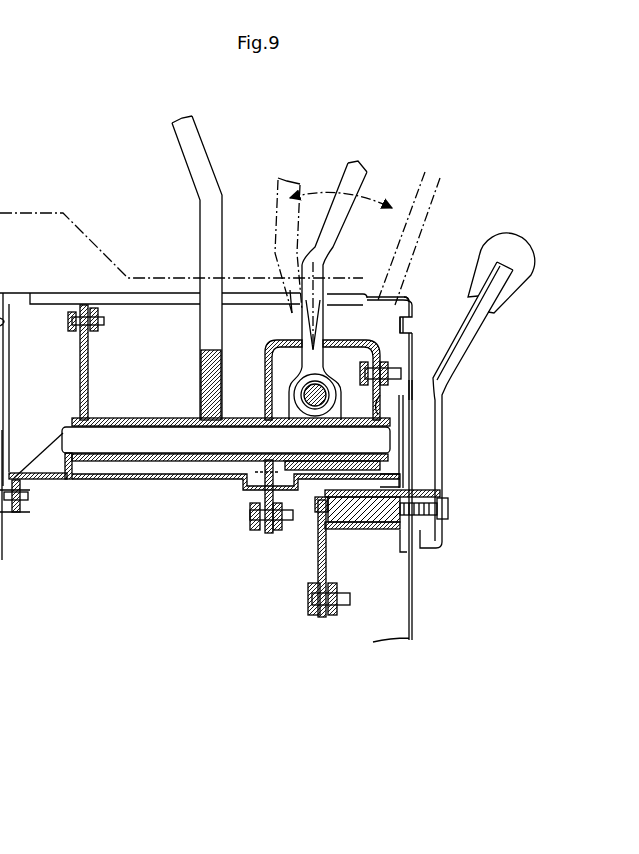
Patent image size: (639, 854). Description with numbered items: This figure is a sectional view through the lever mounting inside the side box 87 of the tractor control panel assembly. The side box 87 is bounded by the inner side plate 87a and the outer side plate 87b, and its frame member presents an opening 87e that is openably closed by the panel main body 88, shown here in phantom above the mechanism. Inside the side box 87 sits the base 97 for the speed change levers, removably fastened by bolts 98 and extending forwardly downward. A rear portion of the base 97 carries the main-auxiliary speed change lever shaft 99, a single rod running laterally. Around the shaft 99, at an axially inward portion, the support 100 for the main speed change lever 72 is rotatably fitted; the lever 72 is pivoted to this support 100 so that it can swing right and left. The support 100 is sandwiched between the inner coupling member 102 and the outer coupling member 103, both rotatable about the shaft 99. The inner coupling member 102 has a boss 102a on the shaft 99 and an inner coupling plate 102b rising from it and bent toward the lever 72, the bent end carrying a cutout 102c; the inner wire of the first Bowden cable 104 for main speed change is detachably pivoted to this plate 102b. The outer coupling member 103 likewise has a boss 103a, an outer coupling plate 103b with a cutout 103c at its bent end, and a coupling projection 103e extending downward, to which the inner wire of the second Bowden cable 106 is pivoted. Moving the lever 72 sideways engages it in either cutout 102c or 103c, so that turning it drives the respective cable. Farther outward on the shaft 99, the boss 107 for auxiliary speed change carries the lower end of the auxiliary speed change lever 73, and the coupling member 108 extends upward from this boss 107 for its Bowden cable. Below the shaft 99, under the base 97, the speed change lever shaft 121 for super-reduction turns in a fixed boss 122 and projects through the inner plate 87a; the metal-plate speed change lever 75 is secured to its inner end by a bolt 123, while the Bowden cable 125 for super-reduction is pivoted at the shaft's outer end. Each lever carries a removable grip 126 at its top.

The main speed change lever 72 is at (313, 175).
The auxiliary speed change lever 73 is at (213, 177).
The speed change lever for super-reduction 75 is at (487, 327).
The side box 87 is at (418, 350).
The inner side plate 87a is at (423, 390).
The outer side plate 87b is at (410, 297).
The opening 87e is at (355, 290).
The panel main body 88 is at (80, 215).
The base 97 is at (86, 478).
The bolts 98 is at (28, 498).
The main-auxiliary speed change lever shaft 99 is at (150, 440).
The support 100 is at (98, 325).
The inner coupling member 102 is at (410, 420).
The boss 102a is at (383, 468).
The inner coupling plate 102b is at (393, 408).
The cutout 102c is at (381, 315).
The outer coupling member 103 is at (262, 390).
The boss 103a is at (247, 468).
The outer coupling plate 103b is at (203, 300).
The cutout 103c is at (290, 290).
The coupling projection 103e is at (250, 497).
The first Bowden cable 104 is at (400, 357).
The second Bowden cable 106 is at (253, 532).
The boss for auxiliary speed change 107 is at (147, 420).
The coupling member for auxiliary speed change 108 is at (97, 370).
The speed change lever shaft for super-reduction 121 is at (353, 520).
The fixed boss 122 is at (410, 558).
The bolt 123 is at (448, 508).
The Bowden cable for speed change by super-reduction 125 is at (330, 617).
The grip 126 is at (520, 277).